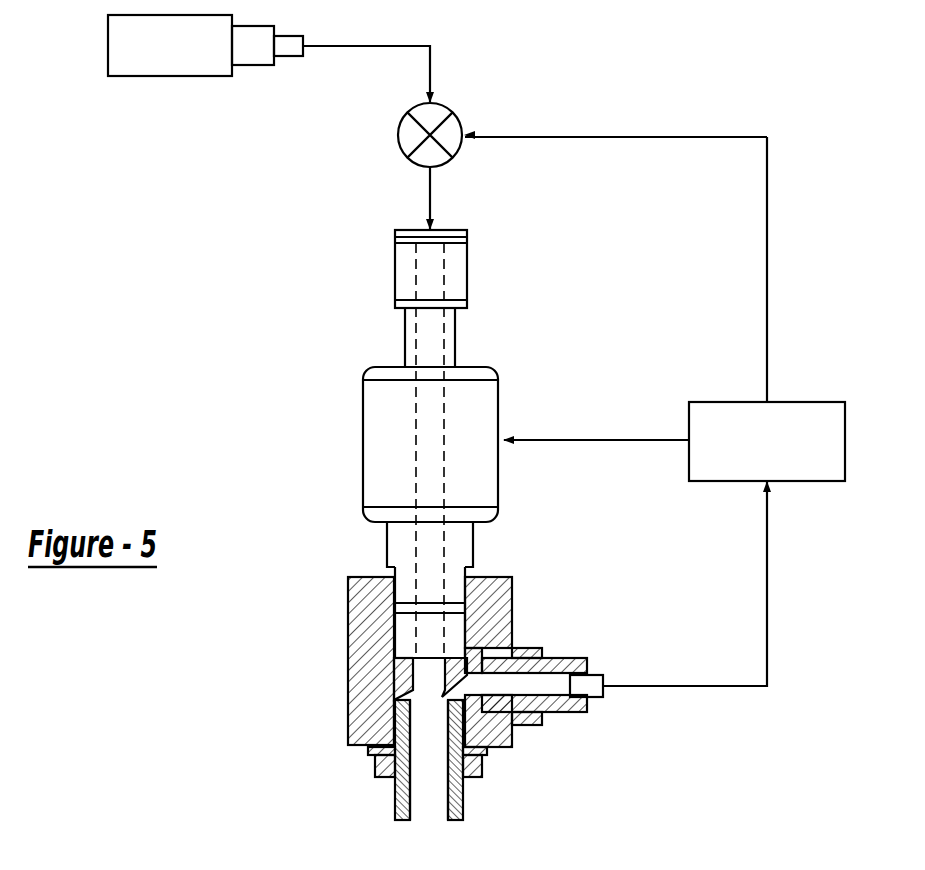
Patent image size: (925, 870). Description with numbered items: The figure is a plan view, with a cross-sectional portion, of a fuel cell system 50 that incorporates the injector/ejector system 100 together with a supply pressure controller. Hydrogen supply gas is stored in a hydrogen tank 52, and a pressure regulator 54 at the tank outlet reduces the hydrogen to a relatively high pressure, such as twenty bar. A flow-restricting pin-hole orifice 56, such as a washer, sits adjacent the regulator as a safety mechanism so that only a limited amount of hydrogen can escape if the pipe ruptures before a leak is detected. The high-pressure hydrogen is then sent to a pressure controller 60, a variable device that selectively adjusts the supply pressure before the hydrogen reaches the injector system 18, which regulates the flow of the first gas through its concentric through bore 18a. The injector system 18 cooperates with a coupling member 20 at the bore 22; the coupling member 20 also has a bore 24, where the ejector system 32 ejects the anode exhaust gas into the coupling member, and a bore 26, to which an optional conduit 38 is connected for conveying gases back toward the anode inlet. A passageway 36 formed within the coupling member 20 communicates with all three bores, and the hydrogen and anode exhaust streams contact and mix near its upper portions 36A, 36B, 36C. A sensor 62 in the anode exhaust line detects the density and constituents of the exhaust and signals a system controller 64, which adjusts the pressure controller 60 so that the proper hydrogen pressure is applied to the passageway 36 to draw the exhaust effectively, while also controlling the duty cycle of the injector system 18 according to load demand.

The hydrogen tank 52 is at (157, 78).
The pressure regulator 54 is at (252, 66).
The flow-restricting pin-hole orifice 56 is at (290, 56).
The pressure controller 60 is at (398, 134).
The fuel cell system 50 is at (537, 107).
The concentric through bore 18a is at (442, 264).
The injector system 18 is at (500, 410).
The injector/ejector system 100 is at (612, 418).
The system controller 64 is at (805, 402).
The bore 22 is at (395, 576).
The coupling member 20 is at (325, 605).
The bore 24 is at (508, 727).
The ejector system 32 is at (563, 656).
The sensor 62 is at (603, 697).
The upper portion of the passageway 36A is at (388, 690).
The bore 26 is at (388, 701).
The optional conduit 38 is at (395, 790).
The upper portion of the passageway 36B is at (448, 698).
The upper portion of the passageway 36C is at (439, 731).
The passageway 36 is at (433, 805).